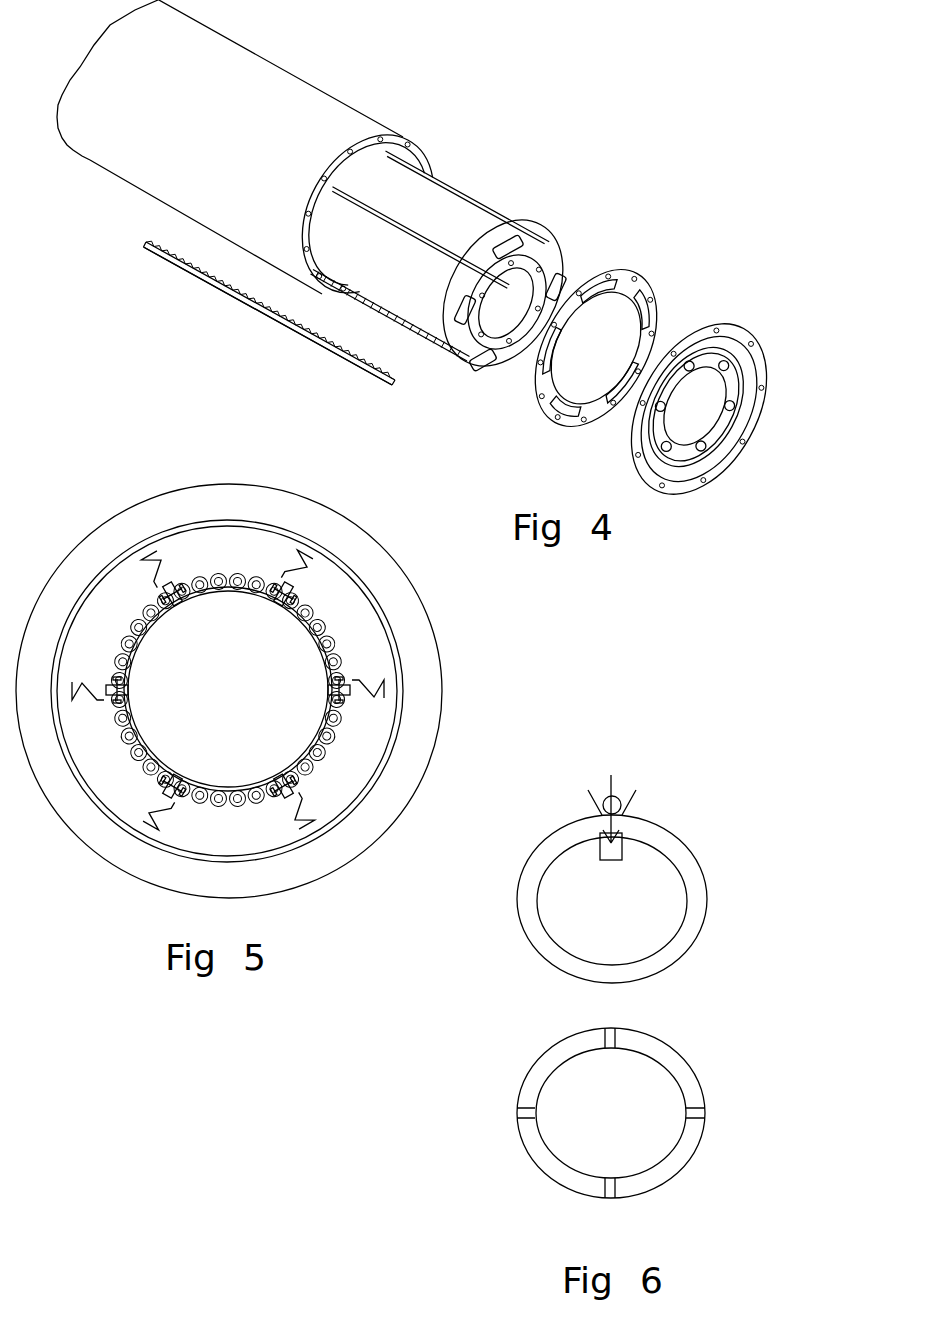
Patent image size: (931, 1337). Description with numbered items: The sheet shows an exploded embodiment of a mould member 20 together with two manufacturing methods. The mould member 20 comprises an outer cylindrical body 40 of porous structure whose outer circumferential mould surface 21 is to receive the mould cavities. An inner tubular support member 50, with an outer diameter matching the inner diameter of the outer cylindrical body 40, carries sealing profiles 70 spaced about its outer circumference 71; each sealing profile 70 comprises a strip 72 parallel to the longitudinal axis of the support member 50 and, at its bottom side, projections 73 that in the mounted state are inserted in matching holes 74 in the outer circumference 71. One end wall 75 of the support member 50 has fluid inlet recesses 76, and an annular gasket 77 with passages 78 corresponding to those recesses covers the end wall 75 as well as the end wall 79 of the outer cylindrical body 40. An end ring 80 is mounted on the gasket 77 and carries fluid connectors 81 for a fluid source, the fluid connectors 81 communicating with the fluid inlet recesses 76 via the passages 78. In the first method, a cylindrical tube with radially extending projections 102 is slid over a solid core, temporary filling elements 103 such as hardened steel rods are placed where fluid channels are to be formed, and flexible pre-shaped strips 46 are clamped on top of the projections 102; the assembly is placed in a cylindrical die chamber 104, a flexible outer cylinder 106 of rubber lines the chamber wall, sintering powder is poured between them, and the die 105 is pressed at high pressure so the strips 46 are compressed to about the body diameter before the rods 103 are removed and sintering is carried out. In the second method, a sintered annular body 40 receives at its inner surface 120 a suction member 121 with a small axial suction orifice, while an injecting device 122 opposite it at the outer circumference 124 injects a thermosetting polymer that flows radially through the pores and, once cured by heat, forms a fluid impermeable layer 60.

In FIG. 4, the mould member 20 is at (333, 39).
In FIG. 4, the outer cylindrical body 40 is at (322, 92).
In FIG. 6, the outer cylindrical body 40 is at (690, 915).
In FIG. 4, the outer circumferential mould surface 21 is at (120, 127).
In FIG. 4, the end wall of the outer cylindrical body 79 is at (398, 146).
In FIG. 4, the inner tubular support member 50 is at (447, 205).
In FIG. 4, the sealing profile 70 is at (420, 245).
In FIG. 4, the outer circumference of the support member 71 is at (326, 224).
In FIG. 4, the strip 72 is at (222, 290).
In FIG. 4, the projections 73 is at (388, 345).
In FIG. 4, the holes 74 is at (440, 336).
In FIG. 4, the end wall of the support member 75 is at (531, 252).
In FIG. 4, the fluid inlet recesses 76 is at (482, 362).
In FIG. 4, the annular gasket 77 is at (637, 282).
In FIG. 4, the passages 78 is at (568, 410).
In FIG. 4, the end ring 80 is at (647, 467).
In FIG. 4, the fluid connectors 81 is at (677, 468).
In FIG. 5, the radially extending projections 102 is at (176, 588).
In FIG. 5, the flexible pre-shaped strips 46 is at (84, 682).
In FIG. 5, the temporary filling elements 103 is at (163, 775).
In FIG. 5, the cylindrical die chamber 104 is at (118, 752).
In FIG. 5, the die 105 is at (441, 684).
In FIG. 5, the flexible outer cylinder 106 is at (393, 632).
In FIG. 6, the inner surface 120 is at (537, 897).
In FIG. 6, the suction member 121 is at (612, 862).
In FIG. 6, the injecting device 122 is at (625, 794).
In FIG. 6, the outer circumference of the annular body 124 is at (685, 838).
In FIG. 6, the fluid impermeable layer 60 is at (605, 1036).